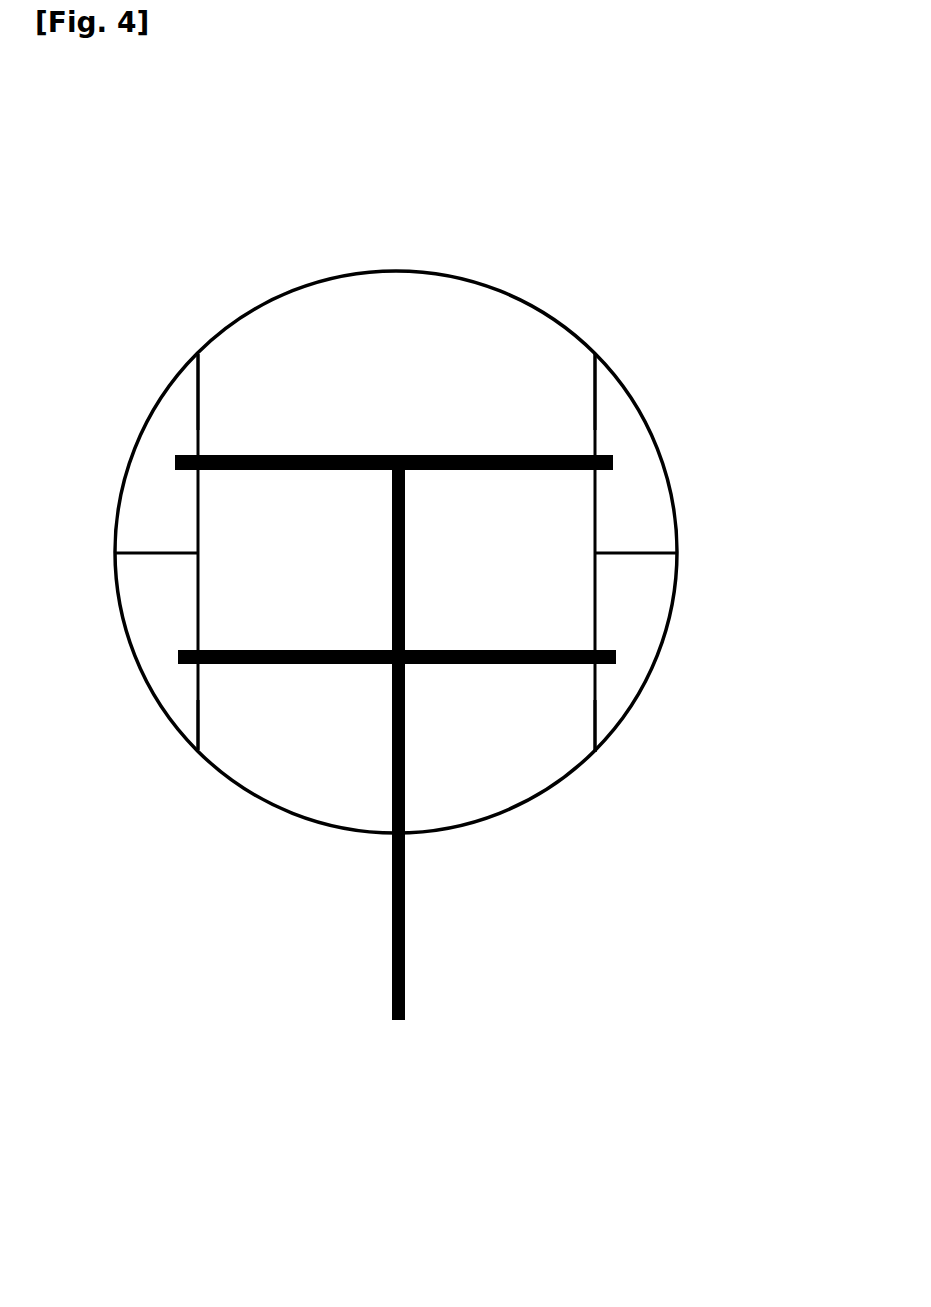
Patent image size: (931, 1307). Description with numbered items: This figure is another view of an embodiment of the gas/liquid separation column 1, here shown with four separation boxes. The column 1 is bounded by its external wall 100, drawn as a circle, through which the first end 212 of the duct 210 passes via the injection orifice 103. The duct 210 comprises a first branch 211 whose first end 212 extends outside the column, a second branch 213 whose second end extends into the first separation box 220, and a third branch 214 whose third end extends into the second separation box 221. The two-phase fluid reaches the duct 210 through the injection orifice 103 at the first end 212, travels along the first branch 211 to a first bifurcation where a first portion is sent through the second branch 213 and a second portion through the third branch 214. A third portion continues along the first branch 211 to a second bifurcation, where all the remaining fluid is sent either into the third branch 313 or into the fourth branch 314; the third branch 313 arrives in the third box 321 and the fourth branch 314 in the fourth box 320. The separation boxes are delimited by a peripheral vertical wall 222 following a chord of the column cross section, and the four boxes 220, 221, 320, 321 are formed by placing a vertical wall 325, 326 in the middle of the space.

The gas/liquid separation column 1 is at (733, 440).
The external wall 100 is at (448, 834).
The injection orifice 103 is at (392, 838).
The duct 210 is at (633, 893).
The first branch 211 is at (405, 963).
The first end 212 is at (397, 1022).
The second branch 213 is at (487, 665).
The third branch 214 is at (293, 657).
The first separation box 220 is at (640, 620).
The second separation box 221 is at (152, 624).
The vertical wall 222 is at (195, 720).
The third branch 313 is at (480, 456).
The fourth branch 314 is at (293, 456).
The fourth box 320 is at (630, 428).
The third box 321 is at (173, 420).
The vertical wall 325 is at (645, 552).
The vertical wall 326 is at (145, 552).